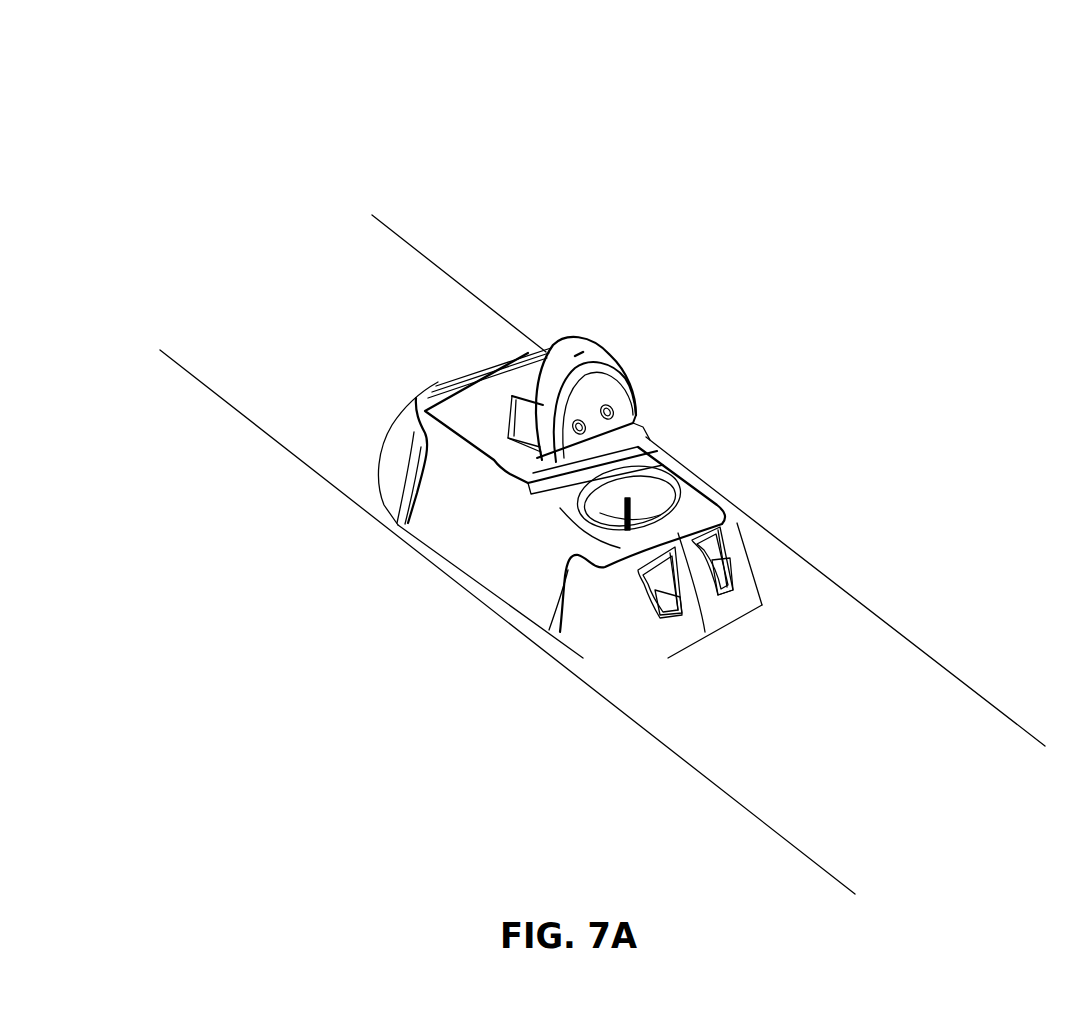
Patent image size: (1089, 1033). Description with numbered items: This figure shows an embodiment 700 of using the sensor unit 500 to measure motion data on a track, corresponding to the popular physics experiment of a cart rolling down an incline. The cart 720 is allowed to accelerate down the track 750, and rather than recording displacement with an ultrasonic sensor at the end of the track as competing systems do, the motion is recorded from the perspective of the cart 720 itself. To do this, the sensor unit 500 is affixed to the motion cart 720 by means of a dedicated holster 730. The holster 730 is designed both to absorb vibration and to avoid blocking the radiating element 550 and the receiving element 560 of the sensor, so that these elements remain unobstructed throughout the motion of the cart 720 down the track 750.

The embodiment 700 is at (298, 140).
The sensor unit 500 is at (559, 346).
The radiating element 550 is at (578, 427).
The receiving element 560 is at (612, 410).
The cart 720 is at (517, 545).
The holster 730 is at (638, 426).
The track 750 is at (827, 662).